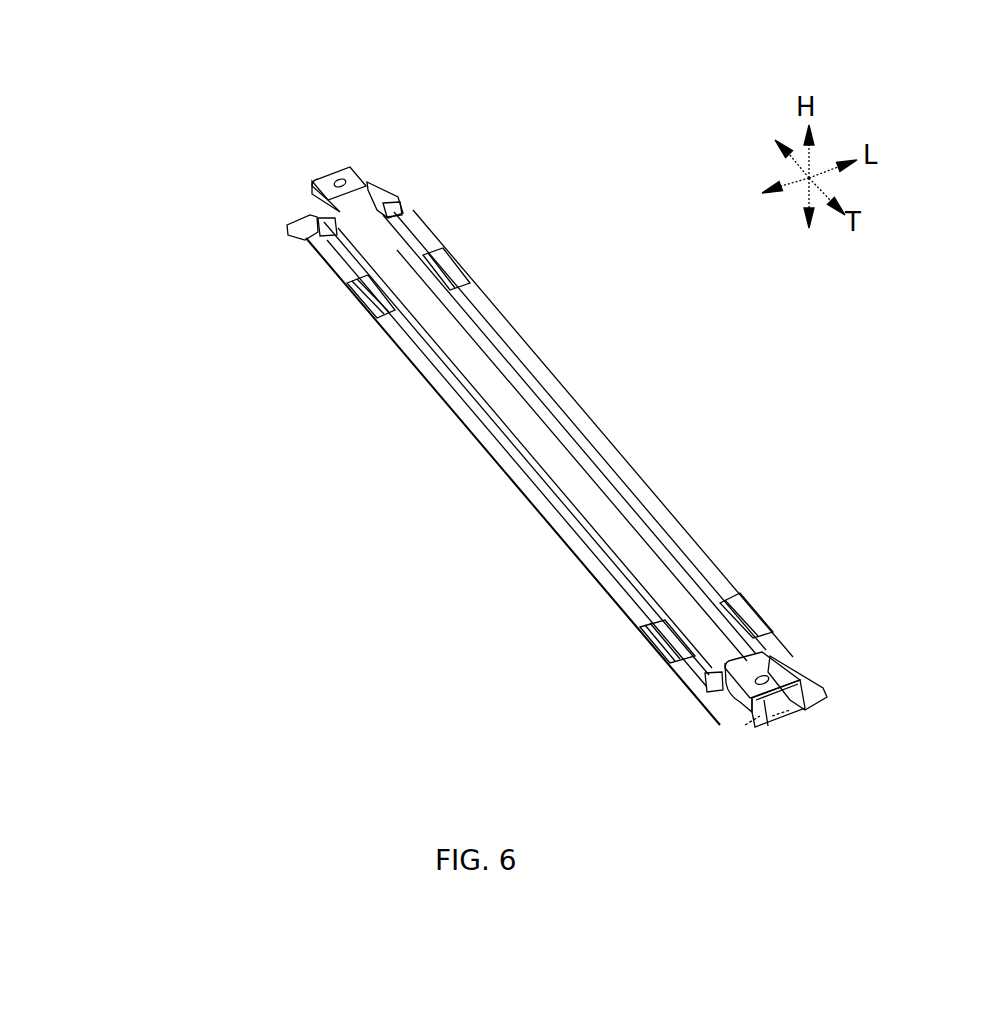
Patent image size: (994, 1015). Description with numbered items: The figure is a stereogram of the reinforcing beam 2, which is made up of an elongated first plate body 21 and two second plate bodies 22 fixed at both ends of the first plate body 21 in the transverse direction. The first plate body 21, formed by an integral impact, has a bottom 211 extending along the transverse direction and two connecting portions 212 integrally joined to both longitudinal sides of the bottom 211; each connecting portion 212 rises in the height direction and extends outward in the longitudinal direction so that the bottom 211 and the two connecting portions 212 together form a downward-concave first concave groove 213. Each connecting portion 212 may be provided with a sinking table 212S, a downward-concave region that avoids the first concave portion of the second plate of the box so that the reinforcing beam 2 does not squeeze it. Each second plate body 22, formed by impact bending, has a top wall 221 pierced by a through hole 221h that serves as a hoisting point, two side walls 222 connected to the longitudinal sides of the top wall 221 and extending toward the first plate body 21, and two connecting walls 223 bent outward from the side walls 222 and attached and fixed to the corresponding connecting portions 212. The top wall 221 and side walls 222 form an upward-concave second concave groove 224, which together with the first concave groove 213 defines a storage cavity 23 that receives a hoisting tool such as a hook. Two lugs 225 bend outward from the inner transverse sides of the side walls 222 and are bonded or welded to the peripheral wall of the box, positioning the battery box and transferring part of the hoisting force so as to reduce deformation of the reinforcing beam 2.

The reinforcing beam 2 is at (46, 223).
The first plate body 21 is at (518, 529).
The bottom 211 is at (786, 727).
The connecting portion 212 is at (618, 453).
The sinking table 212S is at (455, 270).
The second plate body 22 is at (344, 130).
The top wall 221 is at (334, 173).
The through hole 221h is at (335, 181).
The side wall 222 is at (312, 193).
The connecting wall 223 is at (288, 222).
The lug 225 is at (322, 232).
The storage cavity 23 is at (650, 752).
The second concave groove 224 is at (770, 712).
The first concave groove 213 is at (768, 724).